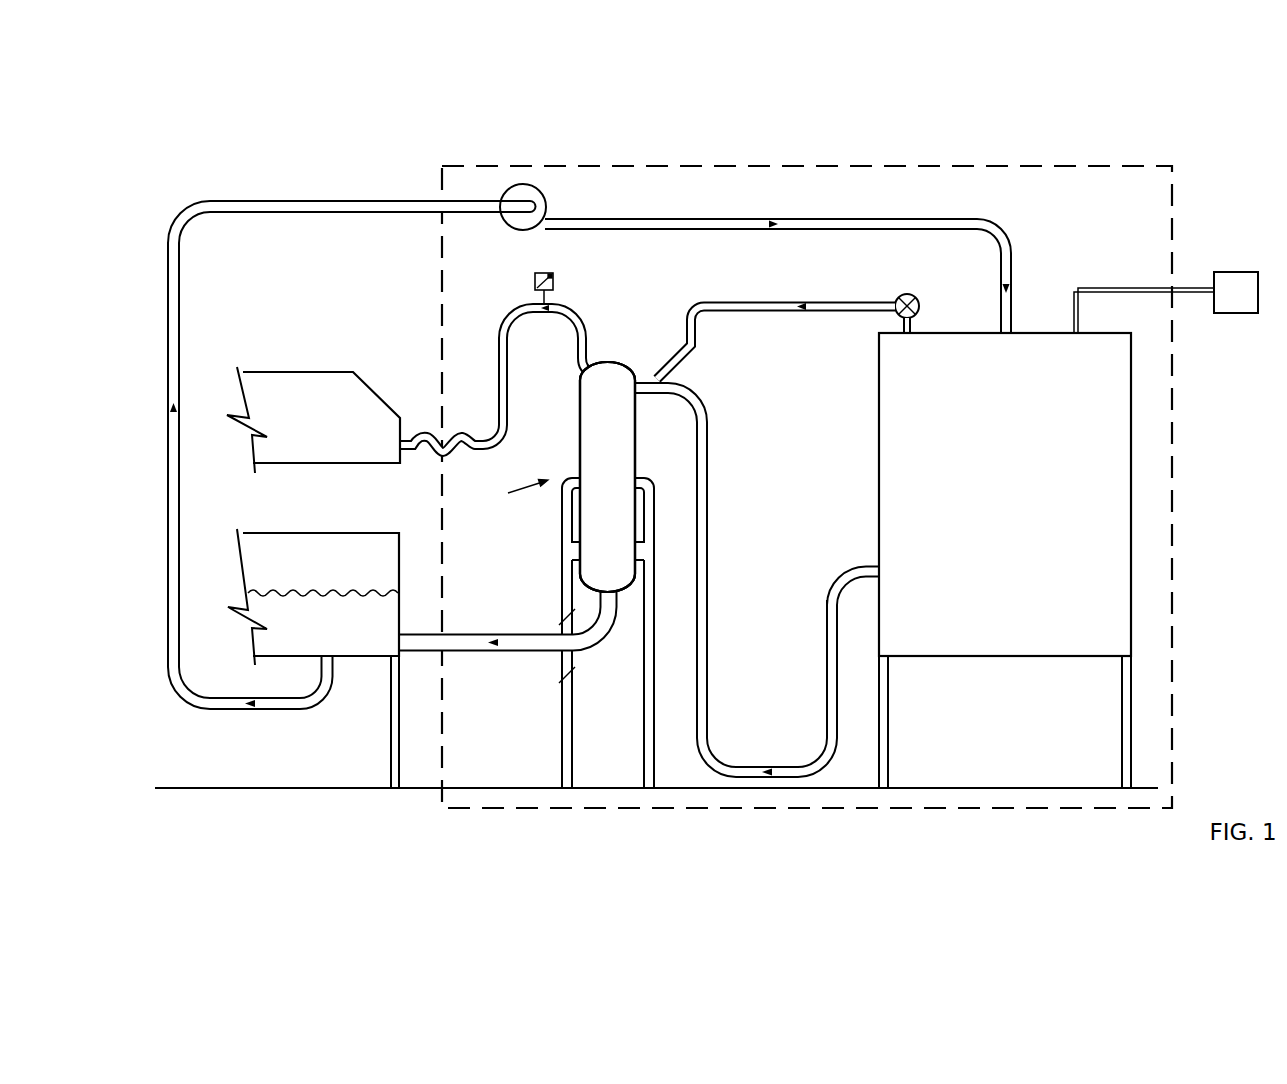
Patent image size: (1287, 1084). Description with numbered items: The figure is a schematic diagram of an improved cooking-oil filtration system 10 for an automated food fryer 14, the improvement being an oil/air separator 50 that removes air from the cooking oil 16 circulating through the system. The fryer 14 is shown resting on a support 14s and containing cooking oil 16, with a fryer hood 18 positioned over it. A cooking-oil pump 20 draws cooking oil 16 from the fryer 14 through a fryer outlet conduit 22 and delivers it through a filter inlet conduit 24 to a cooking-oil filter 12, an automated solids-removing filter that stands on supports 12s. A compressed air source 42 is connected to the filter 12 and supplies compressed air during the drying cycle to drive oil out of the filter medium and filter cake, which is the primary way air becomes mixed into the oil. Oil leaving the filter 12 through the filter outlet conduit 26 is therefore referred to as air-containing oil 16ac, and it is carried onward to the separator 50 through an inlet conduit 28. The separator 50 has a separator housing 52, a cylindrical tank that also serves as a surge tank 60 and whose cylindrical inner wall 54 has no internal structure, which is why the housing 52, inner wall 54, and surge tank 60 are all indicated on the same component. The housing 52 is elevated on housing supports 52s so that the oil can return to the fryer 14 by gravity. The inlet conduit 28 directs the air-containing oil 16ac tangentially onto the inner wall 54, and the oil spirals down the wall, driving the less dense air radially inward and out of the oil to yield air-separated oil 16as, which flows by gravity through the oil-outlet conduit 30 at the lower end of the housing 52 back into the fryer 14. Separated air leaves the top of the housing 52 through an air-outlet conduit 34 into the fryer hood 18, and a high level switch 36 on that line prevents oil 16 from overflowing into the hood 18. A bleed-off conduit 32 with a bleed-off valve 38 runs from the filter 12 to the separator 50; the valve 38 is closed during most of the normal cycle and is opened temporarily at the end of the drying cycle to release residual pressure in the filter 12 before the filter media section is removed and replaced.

The cooking-oil filtration system 10 is at (1110, 211).
The cooking-oil filter 12 is at (996, 489).
The tank support 12s is at (883, 728).
The food fryer 14 is at (301, 569).
The reservoir support 14s is at (395, 738).
The cooking oil 16 is at (275, 207).
The air-separated oil 16as is at (527, 644).
The air-containing oil 16ac is at (830, 650).
The fryer hood 18 is at (306, 428).
The cooking-oil pump 20 is at (537, 198).
The fryer outlet conduit 22 is at (293, 704).
The filter inlet conduit 24 is at (847, 225).
The filter outlet conduit 26 is at (740, 773).
The inlet conduit 28 is at (642, 386).
The oil-outlet conduit 30 is at (598, 625).
The bleed-off conduit 32 is at (730, 307).
The air-outlet conduit 34 is at (503, 312).
The high level switch 36 is at (553, 277).
The bleed-off valve 38 is at (908, 296).
The compressed air source 42 is at (1224, 303).
The oil/air separator 50 is at (513, 494).
The separator housing 52 is at (595, 448).
The housing supports 52s is at (565, 580).
The cylindrical inner wall 54 is at (595, 483).
The surge tank 60 is at (595, 523).